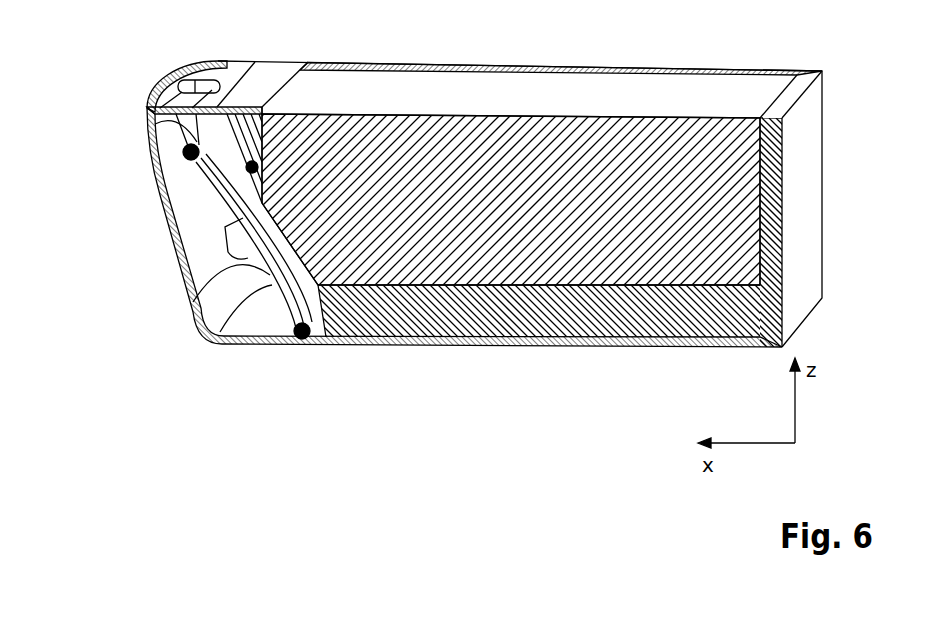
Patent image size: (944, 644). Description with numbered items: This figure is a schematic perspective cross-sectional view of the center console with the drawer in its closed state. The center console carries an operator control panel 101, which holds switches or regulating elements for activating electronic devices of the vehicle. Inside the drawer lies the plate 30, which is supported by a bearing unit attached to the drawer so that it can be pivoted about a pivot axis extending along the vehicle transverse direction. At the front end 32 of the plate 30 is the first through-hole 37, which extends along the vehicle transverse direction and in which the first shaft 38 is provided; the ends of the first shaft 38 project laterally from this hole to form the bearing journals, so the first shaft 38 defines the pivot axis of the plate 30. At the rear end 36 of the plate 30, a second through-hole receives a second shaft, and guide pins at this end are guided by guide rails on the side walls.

The operator control panel 101 is at (653, 95).
The plate 30 is at (268, 262).
The front end 32 is at (178, 82).
The rear end 36 is at (318, 322).
The first through-hole 37 is at (186, 153).
The first shaft 38 is at (297, 345).